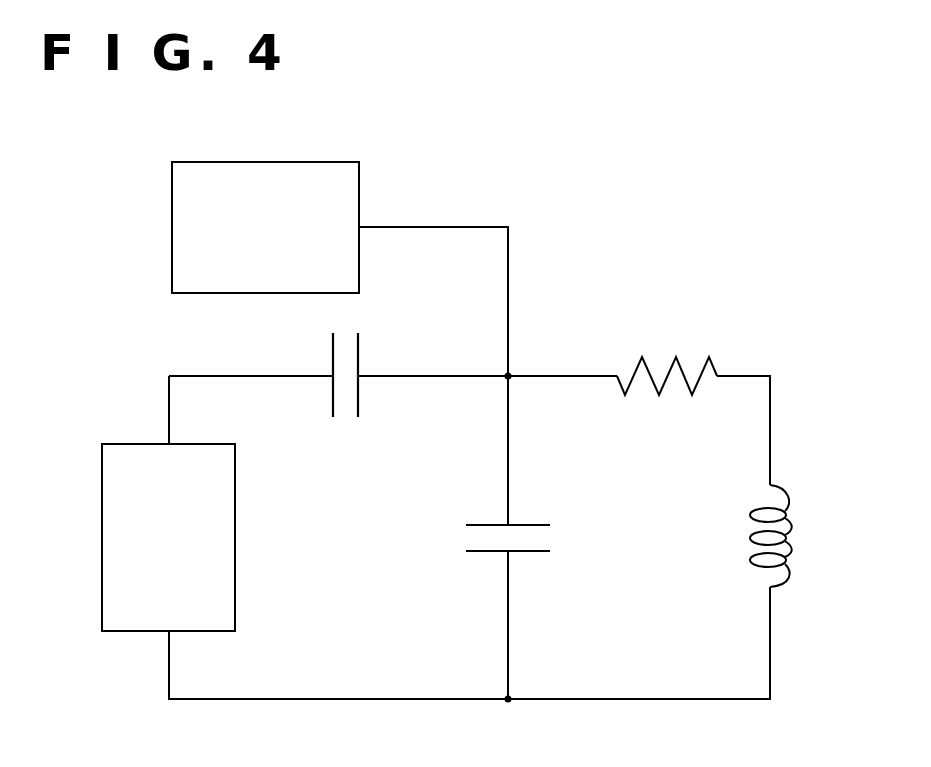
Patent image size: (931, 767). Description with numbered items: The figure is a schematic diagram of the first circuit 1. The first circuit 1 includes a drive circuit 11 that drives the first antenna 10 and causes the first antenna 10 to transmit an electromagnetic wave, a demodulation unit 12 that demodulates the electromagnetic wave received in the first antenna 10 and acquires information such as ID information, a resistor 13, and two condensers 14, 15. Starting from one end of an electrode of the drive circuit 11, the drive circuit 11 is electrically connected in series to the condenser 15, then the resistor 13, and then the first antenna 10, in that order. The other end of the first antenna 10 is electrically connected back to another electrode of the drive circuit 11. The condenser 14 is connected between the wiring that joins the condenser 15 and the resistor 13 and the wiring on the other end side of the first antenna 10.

The first circuit 1 is at (745, 178).
The first antenna 10 is at (790, 525).
The drive circuit 11 is at (102, 490).
The demodulation unit 12 is at (172, 190).
The resistor 13 is at (676, 357).
The condenser 14 is at (527, 553).
The condenser 15 is at (333, 336).